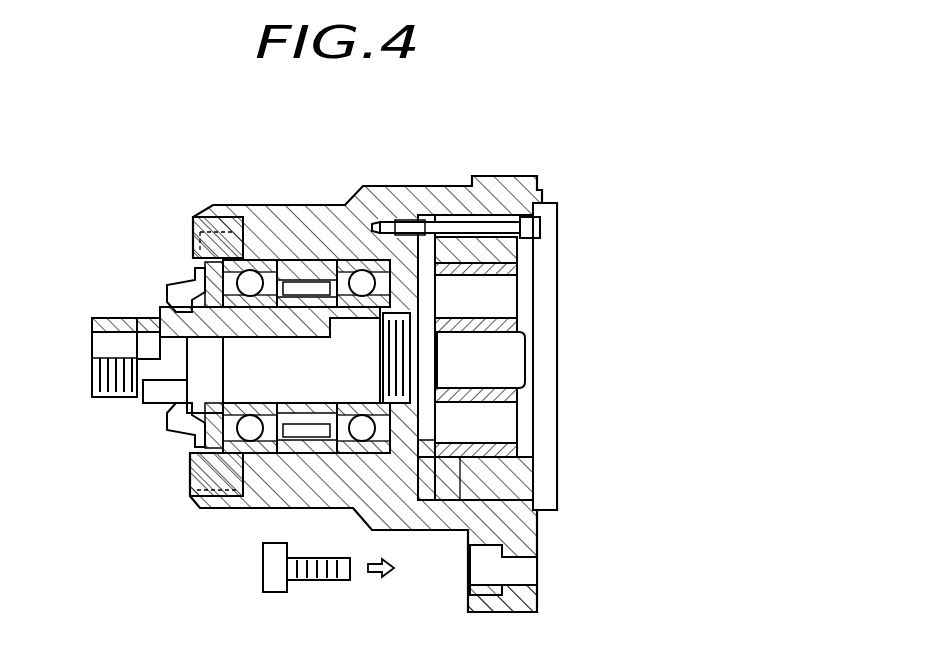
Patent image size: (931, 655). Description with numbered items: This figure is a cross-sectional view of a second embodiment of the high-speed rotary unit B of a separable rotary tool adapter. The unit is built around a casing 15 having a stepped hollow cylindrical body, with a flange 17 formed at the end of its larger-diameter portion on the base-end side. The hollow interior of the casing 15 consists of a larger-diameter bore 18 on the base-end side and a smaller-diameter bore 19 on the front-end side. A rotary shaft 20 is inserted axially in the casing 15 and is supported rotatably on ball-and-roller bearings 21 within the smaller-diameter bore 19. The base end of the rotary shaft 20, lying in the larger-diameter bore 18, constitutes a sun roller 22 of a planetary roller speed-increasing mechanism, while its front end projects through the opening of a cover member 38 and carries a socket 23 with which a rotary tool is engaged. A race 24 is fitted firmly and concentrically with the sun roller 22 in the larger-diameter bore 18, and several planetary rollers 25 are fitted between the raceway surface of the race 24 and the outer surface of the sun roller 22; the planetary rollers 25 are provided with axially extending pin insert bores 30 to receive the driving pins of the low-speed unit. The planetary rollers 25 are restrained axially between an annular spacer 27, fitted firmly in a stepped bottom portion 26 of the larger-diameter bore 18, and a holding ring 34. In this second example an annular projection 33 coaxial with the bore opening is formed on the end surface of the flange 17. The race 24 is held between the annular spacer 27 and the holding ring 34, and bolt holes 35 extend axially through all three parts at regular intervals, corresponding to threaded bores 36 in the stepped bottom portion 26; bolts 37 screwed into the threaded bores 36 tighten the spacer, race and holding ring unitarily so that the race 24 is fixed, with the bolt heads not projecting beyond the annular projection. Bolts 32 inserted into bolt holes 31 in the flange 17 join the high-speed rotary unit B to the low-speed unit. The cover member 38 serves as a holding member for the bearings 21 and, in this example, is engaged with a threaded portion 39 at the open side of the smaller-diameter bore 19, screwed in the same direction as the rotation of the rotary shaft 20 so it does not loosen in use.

The high-speed rotary unit B is at (126, 190).
The casing 15 is at (323, 220).
The flange 17 is at (513, 600).
The larger-diameter bore 18 is at (497, 480).
The smaller-diameter bore 19 is at (308, 450).
The rotary shaft 20 is at (260, 377).
The ball-and-roller bearings 21 is at (356, 282).
The sun roller 22 is at (498, 362).
The socket 23 is at (122, 348).
The race 24 is at (447, 482).
The planetary rollers 25 is at (473, 448).
The stepped bottom portion 26 is at (378, 555).
The annular spacer 27 is at (427, 265).
The pin insert bores 30 is at (513, 293).
The bolt holes 31 is at (522, 568).
The bolts 32 is at (317, 582).
The annular projection 33 is at (543, 213).
The holding ring 34 is at (522, 470).
The bolt holes 35 is at (458, 233).
The threaded bores 36 is at (402, 230).
The bolts 37 is at (515, 230).
The cover member 38 is at (205, 467).
The threaded portion 39 is at (212, 222).